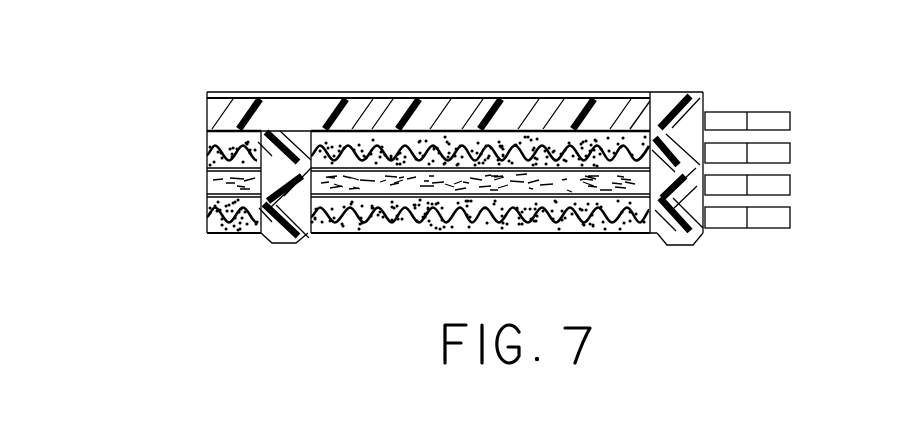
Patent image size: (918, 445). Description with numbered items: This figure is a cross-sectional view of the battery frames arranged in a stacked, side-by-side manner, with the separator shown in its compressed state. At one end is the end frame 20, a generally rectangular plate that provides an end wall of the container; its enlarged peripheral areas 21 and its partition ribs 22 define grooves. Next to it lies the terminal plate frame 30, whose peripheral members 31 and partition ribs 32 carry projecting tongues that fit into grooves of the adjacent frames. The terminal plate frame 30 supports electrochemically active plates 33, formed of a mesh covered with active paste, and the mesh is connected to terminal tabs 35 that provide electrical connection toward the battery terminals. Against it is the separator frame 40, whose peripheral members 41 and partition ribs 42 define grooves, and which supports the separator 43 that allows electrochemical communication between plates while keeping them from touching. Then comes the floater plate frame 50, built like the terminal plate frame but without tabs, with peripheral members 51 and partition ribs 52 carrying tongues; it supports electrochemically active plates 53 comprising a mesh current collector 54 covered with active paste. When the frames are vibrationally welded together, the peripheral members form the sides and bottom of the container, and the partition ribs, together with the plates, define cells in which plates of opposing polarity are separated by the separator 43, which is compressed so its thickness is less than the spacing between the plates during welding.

The end frame 20 is at (188, 103).
The terminal plate frame 30 is at (359, 104).
The separator frame 40 is at (359, 226).
The floater plate frame 50 is at (359, 248).
The partition ribs 22 is at (264, 171).
The electrochemically active plates 33 is at (449, 150).
The terminal tabs 35 is at (495, 157).
The peripheral areas 21 is at (709, 176).
The peripheral members 31 is at (703, 106).
The partition ribs 32 is at (272, 198).
The partition ribs 52 is at (280, 238).
The partition ribs 42 is at (298, 215).
The mesh current collector 54 is at (440, 213).
The electrochemically active plates 53 is at (515, 233).
The separator 43 is at (594, 180).
The peripheral members 51 is at (687, 235).
The peripheral members 41 is at (707, 192).